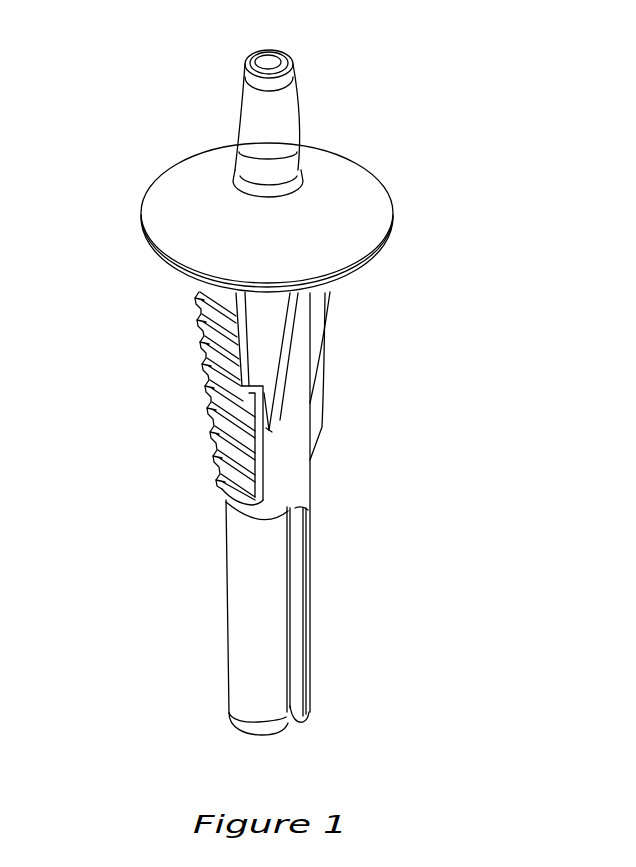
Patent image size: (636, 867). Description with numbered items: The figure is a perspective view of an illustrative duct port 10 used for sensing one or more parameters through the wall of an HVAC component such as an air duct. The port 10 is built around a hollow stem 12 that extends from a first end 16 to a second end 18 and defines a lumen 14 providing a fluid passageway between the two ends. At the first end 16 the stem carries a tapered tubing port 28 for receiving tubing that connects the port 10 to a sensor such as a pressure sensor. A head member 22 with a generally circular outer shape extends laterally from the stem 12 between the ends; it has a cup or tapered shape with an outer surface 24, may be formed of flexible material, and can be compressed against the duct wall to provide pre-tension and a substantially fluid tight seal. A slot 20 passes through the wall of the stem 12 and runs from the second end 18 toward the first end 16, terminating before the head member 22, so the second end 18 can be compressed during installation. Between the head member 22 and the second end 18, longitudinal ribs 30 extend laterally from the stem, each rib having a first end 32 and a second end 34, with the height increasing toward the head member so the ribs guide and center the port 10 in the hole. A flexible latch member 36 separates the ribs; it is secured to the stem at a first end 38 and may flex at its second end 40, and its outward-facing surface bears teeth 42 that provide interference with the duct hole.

The port 10 is at (514, 110).
The hollow stem 12 is at (247, 625).
The lumen 14 is at (288, 705).
The first end 16 is at (322, 97).
The second end 18 is at (330, 662).
The slot 20 is at (298, 595).
The head member 22 is at (373, 222).
The outer surface 24 is at (163, 192).
The tubing port 28 is at (286, 59).
The ribs 30 is at (317, 330).
The first end of rib 32 is at (270, 424).
The second end of rib 34 is at (283, 302).
The latch member 36 is at (245, 394).
The first end of latch member 38 is at (233, 476).
The second end of latch member 40 is at (208, 302).
The teeth 42 is at (210, 348).